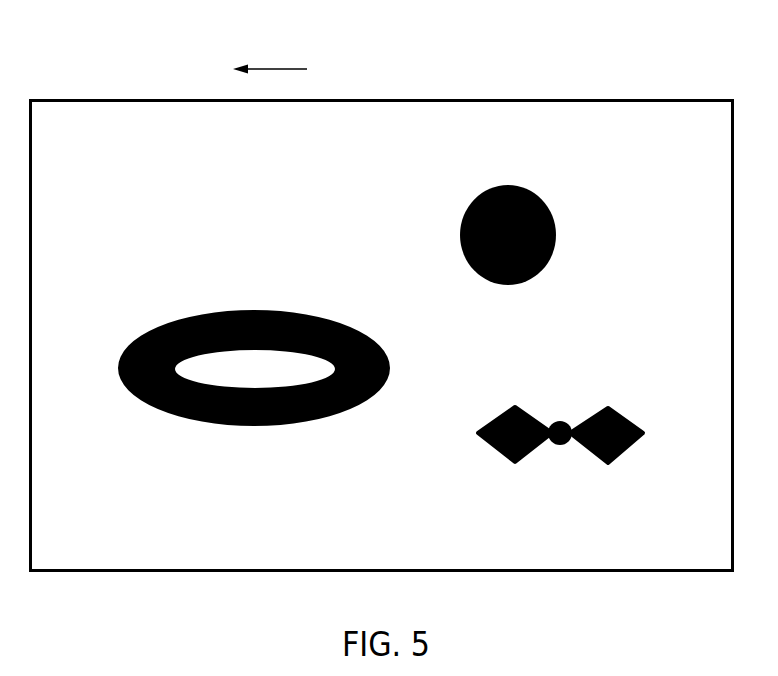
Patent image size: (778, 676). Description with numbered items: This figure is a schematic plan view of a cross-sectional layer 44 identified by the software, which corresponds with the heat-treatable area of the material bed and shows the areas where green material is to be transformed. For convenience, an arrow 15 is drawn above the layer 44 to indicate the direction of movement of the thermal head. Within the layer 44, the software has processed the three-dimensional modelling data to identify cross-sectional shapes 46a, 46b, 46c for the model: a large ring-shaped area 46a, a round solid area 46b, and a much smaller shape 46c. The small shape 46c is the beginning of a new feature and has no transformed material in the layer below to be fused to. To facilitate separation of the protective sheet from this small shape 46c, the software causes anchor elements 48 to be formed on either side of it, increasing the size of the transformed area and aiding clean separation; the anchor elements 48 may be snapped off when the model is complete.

The arrow 15 is at (283, 69).
The cross-sectional layer 44 is at (595, 572).
The cross-sectional shape 46a is at (322, 292).
The cross-sectional shape 46b is at (541, 195).
The small cross-sectional shape 46c is at (565, 421).
The anchor elements 48 is at (505, 456).